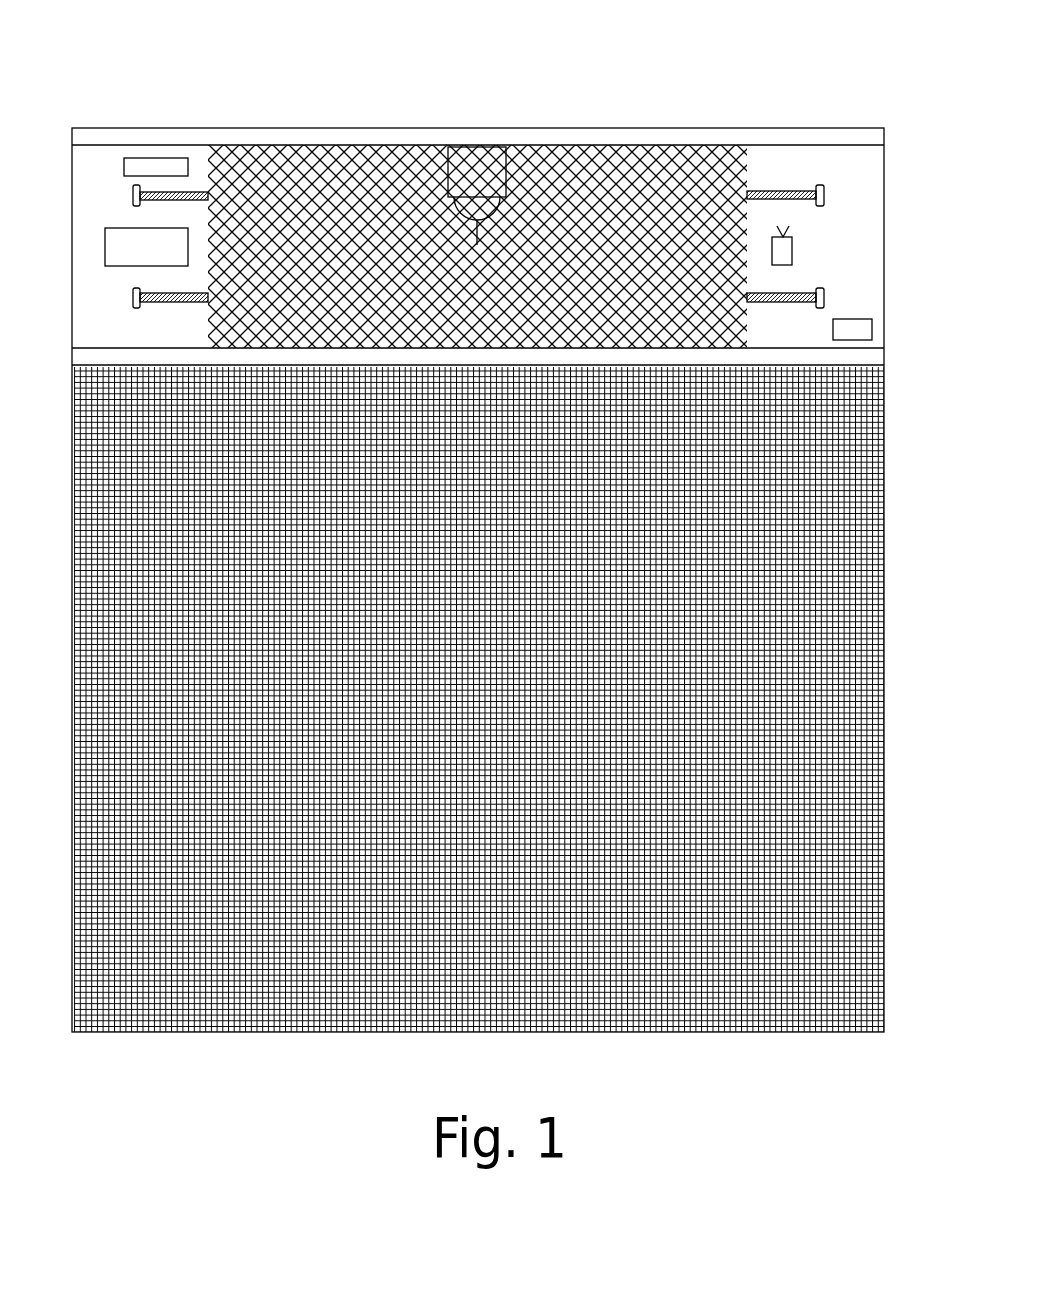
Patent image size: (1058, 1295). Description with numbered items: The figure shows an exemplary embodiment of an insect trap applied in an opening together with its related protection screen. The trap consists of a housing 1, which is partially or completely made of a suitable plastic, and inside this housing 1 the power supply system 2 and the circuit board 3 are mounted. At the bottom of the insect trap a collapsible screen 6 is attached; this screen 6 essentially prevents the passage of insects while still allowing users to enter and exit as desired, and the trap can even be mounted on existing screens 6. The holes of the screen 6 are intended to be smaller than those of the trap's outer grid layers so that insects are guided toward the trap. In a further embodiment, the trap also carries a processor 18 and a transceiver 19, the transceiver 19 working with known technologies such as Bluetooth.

The housing 1 is at (874, 213).
The power supply system 2 is at (121, 224).
The circuit board 3 is at (164, 156).
The collapsible screen 6 is at (167, 1027).
The processor 18 is at (865, 319).
The transceiver 19 is at (792, 253).